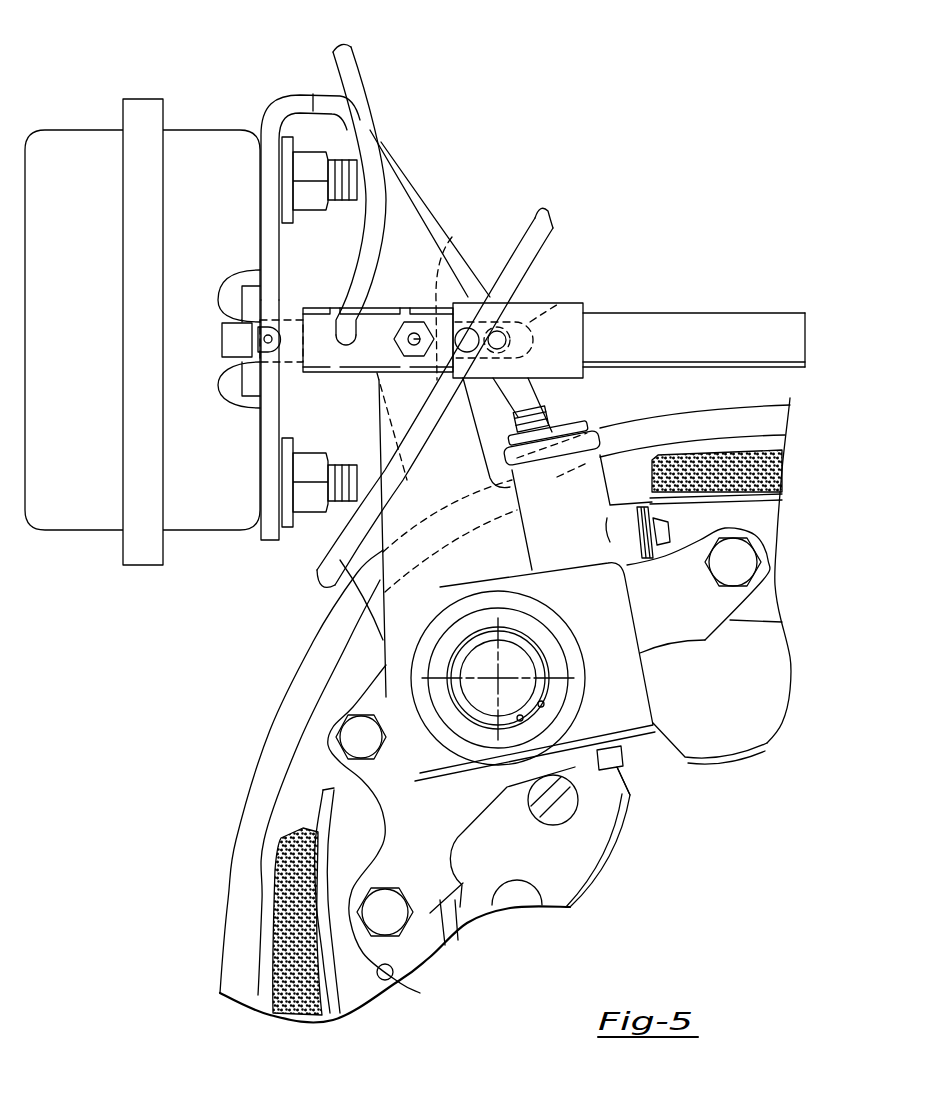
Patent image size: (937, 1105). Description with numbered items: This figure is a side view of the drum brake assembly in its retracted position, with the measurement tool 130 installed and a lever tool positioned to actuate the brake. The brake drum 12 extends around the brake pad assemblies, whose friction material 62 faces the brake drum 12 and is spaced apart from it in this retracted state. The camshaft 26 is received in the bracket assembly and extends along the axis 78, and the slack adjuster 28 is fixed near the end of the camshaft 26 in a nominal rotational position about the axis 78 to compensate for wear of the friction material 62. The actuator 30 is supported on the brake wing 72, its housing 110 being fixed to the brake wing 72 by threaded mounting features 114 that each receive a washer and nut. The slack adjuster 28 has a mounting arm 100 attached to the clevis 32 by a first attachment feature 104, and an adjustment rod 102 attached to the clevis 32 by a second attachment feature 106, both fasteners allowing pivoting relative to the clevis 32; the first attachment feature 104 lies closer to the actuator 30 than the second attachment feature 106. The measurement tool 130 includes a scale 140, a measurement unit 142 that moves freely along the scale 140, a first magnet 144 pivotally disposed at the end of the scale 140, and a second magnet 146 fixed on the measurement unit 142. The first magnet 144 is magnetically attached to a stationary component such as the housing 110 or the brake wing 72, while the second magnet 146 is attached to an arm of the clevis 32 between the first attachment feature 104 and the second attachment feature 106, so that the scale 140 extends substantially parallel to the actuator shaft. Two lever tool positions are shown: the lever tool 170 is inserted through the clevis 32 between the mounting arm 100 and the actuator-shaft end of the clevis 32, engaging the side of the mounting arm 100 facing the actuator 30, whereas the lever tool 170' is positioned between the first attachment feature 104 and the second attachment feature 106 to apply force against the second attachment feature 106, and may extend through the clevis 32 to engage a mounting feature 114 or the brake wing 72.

The brake drum 12 is at (237, 857).
The camshaft 26 is at (530, 672).
The slack adjuster 28 is at (624, 713).
The actuator 30 is at (78, 210).
The clevis 32 is at (317, 308).
The friction material 62 is at (767, 478).
The brake wing 72 is at (282, 100).
The axis 78 is at (500, 677).
The mounting arm 100 is at (397, 237).
The adjustment rod 102 is at (520, 402).
The first attachment feature 104 is at (424, 345).
The second attachment feature 106 is at (560, 300).
The housing 110 is at (213, 513).
The mounting feature 114 is at (343, 200).
The measurement tool 130 is at (725, 299).
The scale 140 is at (677, 313).
The measurement unit 142 is at (583, 348).
The first magnet 144 is at (260, 339).
The second magnet 146 is at (500, 303).
The lever tool 170 is at (343, 173).
The lever tool 170' is at (435, 389).